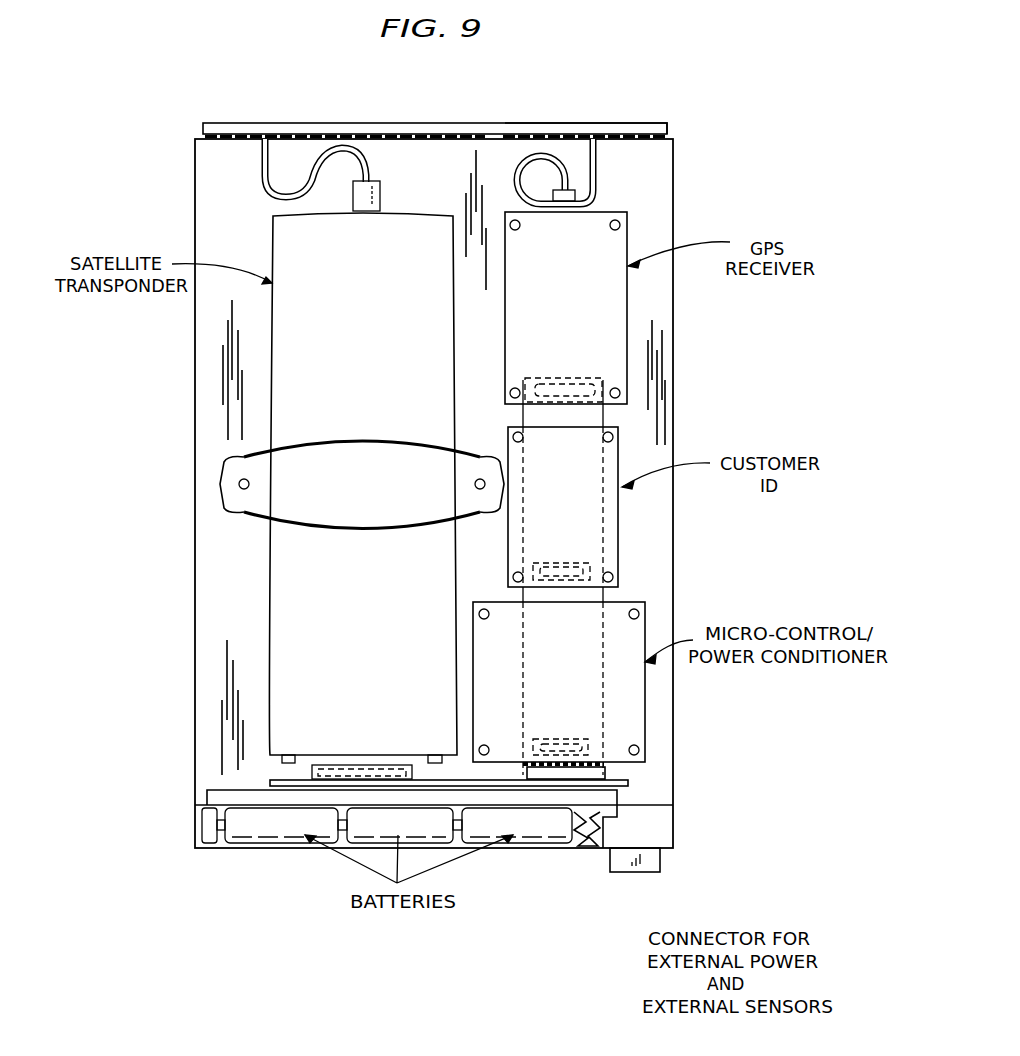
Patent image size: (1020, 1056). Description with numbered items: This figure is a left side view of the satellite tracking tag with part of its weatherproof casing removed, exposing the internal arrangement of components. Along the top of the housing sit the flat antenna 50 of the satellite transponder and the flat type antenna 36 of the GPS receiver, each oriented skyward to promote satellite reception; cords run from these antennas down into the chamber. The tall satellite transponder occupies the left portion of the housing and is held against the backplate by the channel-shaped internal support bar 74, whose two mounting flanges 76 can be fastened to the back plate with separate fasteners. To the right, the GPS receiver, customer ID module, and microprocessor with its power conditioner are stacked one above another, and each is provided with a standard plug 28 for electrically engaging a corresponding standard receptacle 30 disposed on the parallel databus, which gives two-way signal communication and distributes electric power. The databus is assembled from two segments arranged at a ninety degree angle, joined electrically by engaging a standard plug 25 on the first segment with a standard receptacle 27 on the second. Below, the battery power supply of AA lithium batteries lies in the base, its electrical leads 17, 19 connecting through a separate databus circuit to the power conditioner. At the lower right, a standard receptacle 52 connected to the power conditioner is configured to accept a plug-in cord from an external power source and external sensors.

The electrical lead 17 is at (236, 790).
The electrical lead 19 is at (595, 842).
The standard plug 25 is at (598, 776).
The standard receptacle 27 is at (600, 765).
The standard plug 28 is at (590, 380).
The standard receptacle 30 is at (563, 378).
The flat type antenna 36 is at (620, 132).
The flat antenna 50 is at (329, 133).
The standard receptacle 52 is at (663, 862).
The internal support bar 74 is at (371, 447).
The mounting flange 76 is at (243, 461).